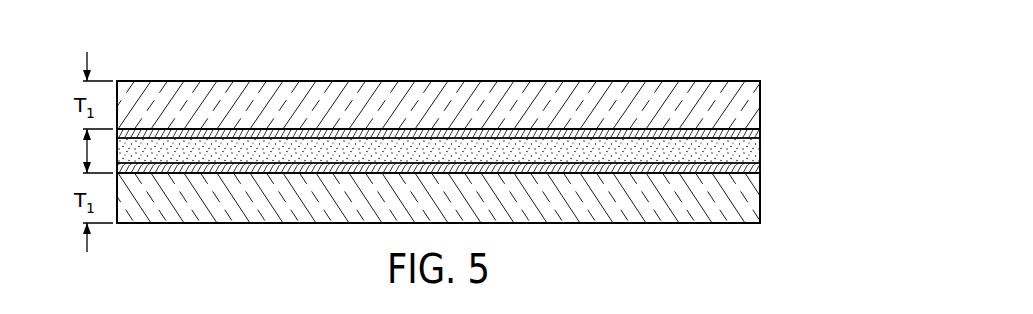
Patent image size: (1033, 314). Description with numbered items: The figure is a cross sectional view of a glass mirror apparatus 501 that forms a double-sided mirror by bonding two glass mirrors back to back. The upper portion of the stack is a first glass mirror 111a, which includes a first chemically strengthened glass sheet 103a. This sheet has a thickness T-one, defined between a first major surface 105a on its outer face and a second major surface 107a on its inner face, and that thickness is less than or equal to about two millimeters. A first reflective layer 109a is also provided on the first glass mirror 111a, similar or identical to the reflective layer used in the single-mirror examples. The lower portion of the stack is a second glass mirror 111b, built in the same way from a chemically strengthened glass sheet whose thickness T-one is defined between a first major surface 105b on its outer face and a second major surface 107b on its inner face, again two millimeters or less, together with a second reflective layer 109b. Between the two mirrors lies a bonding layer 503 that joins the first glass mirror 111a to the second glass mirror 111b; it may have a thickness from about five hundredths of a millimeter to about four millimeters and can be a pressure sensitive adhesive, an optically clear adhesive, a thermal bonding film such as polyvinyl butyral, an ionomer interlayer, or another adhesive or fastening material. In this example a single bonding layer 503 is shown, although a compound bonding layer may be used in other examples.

The glass mirror apparatus 501 is at (823, 77).
The first chemically strengthened glass sheet 103a is at (700, 80).
The first major surface 105a is at (548, 80).
The first major surface 105b is at (548, 225).
The second major surface 107a is at (667, 138).
The second major surface 107b is at (258, 173).
The first reflective layer 109a is at (168, 136).
The second reflective layer 109b is at (168, 172).
The first glass mirror 111a is at (765, 81).
The second glass mirror 111b is at (765, 173).
The bonding layer 503 is at (762, 151).